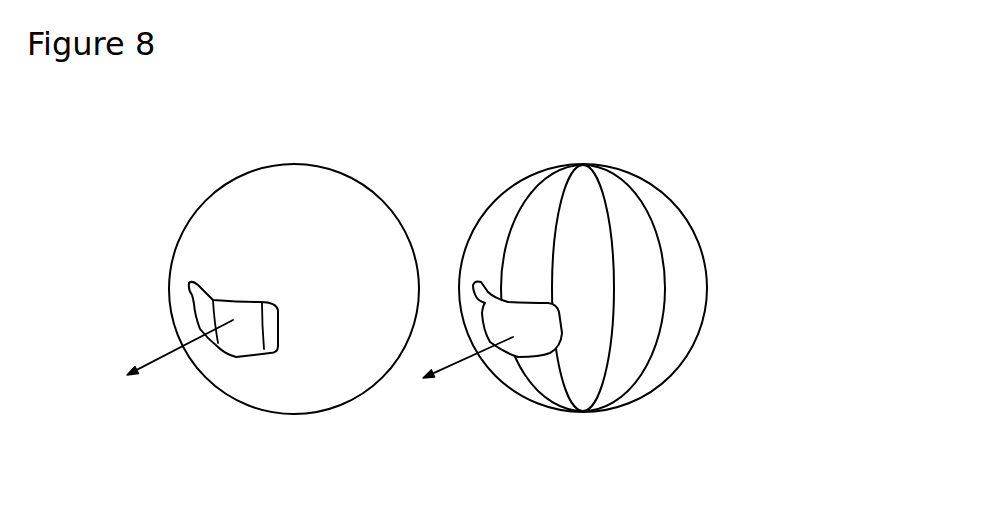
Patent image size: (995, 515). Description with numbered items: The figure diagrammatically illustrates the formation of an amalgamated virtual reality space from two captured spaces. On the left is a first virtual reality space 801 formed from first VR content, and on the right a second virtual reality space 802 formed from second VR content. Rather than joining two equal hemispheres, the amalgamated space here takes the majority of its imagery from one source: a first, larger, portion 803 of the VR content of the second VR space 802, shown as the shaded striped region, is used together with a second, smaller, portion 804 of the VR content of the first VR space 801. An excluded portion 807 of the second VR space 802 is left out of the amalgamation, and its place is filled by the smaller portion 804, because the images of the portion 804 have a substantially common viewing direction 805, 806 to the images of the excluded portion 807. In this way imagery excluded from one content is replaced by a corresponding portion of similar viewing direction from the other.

The first virtual reality space 801 is at (344, 139).
The second virtual reality space 802 is at (718, 345).
The first, larger, portion 803 is at (527, 242).
The second, smaller, portion 804 is at (225, 315).
The viewing direction 805 is at (155, 363).
The viewing direction 806 is at (452, 367).
The excluded portion 807 is at (543, 342).